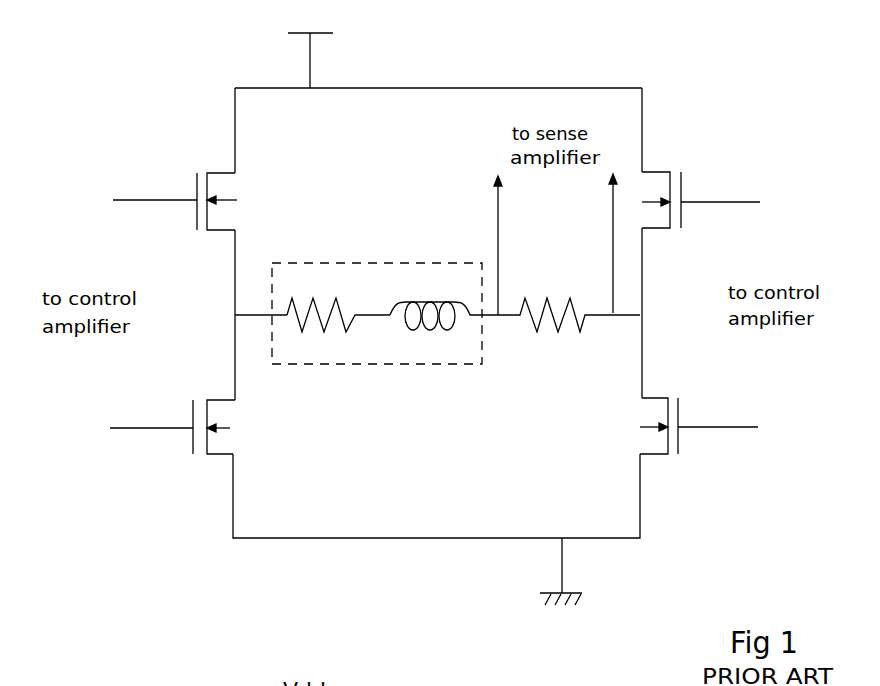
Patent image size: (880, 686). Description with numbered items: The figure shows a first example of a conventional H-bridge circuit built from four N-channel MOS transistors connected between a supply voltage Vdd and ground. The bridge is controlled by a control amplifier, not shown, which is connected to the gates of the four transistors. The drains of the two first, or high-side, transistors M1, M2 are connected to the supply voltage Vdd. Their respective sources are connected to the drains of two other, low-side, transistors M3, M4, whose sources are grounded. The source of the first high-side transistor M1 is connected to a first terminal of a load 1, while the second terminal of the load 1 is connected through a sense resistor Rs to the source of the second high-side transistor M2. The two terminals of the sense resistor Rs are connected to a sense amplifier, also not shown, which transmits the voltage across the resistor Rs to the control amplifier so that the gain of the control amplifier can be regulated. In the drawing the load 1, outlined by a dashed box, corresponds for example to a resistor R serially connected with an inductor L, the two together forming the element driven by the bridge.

The load 1 is at (377, 277).
The first high-side transistor M1 is at (192, 201).
The second high-side transistor M2 is at (701, 197).
The low-side transistor M3 is at (191, 427).
The low-side transistor M4 is at (676, 426).
The resistor R is at (338, 304).
The inductor L is at (436, 302).
The sense resistor Rs is at (561, 303).
The supply voltage Vdd is at (310, 48).